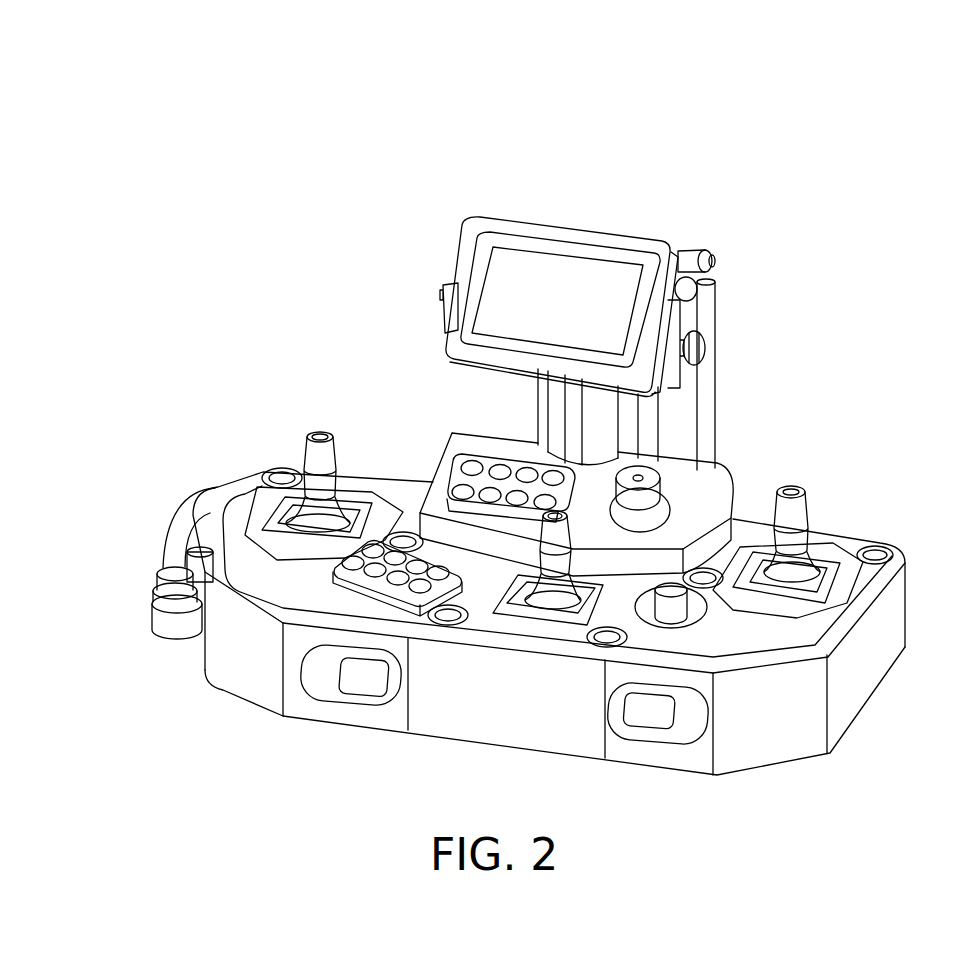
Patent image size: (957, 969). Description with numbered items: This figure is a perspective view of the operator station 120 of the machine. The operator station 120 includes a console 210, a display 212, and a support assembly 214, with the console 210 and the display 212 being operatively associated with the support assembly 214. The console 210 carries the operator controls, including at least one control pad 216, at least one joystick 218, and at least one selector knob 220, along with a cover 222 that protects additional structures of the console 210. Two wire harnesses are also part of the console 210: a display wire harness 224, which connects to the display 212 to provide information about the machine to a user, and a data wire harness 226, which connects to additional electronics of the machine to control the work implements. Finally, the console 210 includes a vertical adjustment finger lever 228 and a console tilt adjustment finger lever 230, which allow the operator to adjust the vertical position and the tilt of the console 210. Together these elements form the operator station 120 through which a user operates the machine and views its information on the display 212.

The operator station 120 is at (781, 109).
The console 210 is at (378, 450).
The display 212 is at (461, 292).
The support assembly 214 is at (737, 297).
The control pad 216 is at (490, 446).
The joystick 218 is at (313, 432).
The selector knob 220 is at (653, 477).
The cover 222 is at (838, 530).
The display wire harness 224 is at (573, 412).
The data wire harness 226 is at (222, 497).
The vertical adjustment finger lever 228 is at (676, 716).
The console tilt adjustment finger lever 230 is at (340, 673).